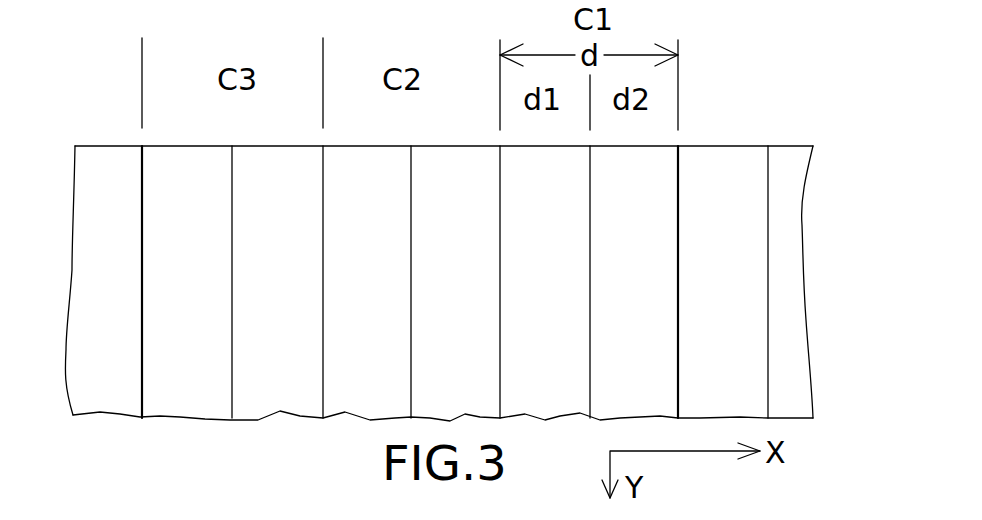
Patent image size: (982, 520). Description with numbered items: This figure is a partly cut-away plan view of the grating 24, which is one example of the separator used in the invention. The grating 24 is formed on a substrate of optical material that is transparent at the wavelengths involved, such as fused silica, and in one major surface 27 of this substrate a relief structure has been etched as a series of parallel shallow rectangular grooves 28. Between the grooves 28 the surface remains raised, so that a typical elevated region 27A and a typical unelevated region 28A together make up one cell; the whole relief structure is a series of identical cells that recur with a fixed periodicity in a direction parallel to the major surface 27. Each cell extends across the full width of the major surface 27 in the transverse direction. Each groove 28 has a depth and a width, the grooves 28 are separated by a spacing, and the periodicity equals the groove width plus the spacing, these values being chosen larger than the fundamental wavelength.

The grating 24 is at (740, 160).
The major surface 27 is at (93, 383).
The elevated region 27A is at (655, 240).
The grooves 28 is at (365, 402).
The unelevated region 28A is at (567, 352).